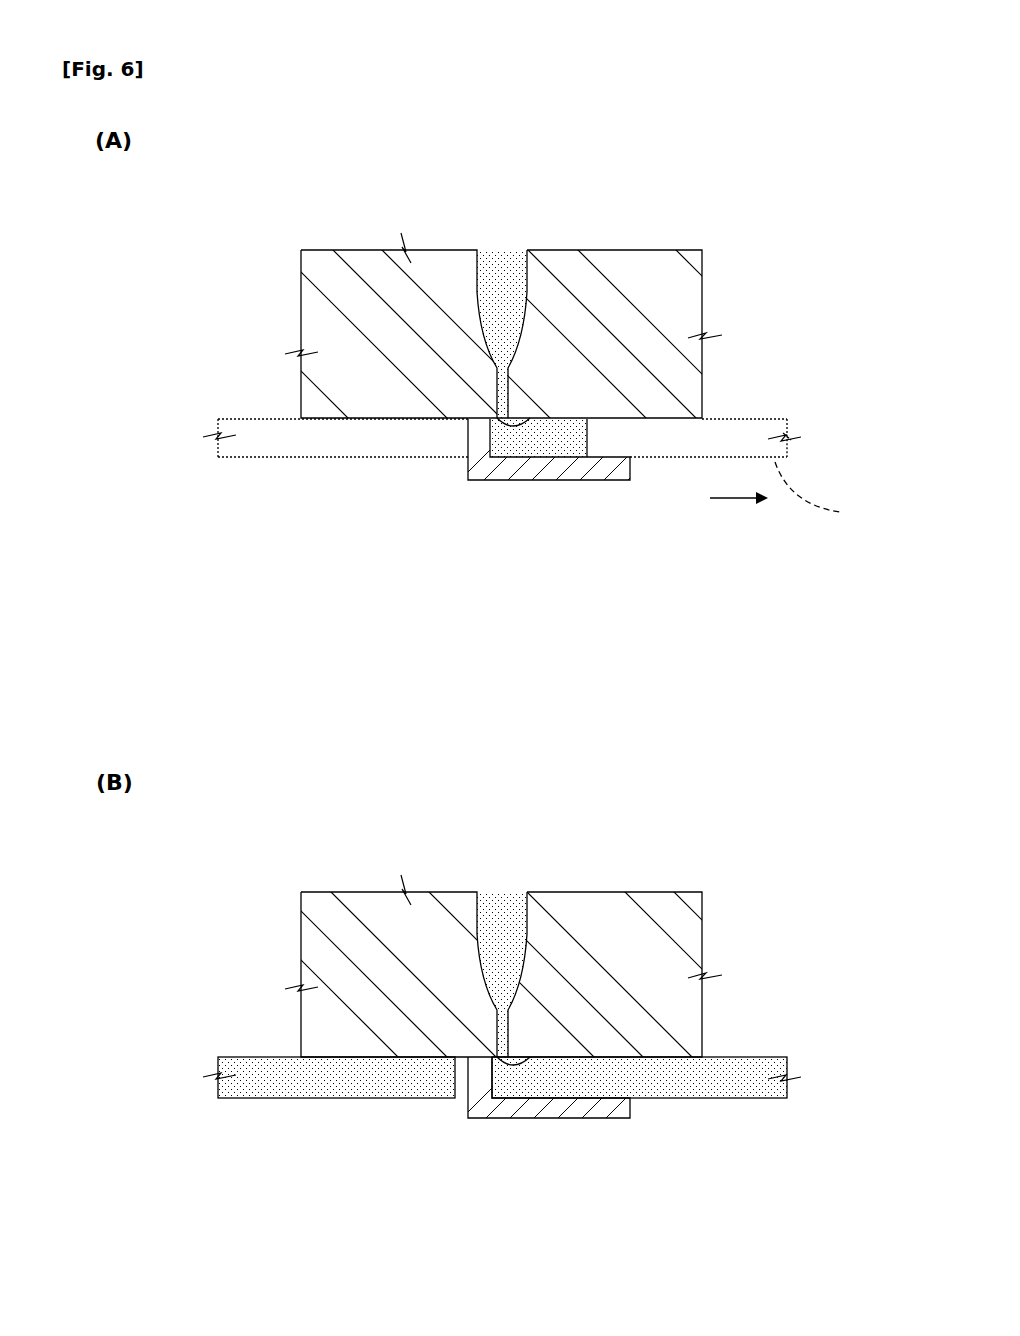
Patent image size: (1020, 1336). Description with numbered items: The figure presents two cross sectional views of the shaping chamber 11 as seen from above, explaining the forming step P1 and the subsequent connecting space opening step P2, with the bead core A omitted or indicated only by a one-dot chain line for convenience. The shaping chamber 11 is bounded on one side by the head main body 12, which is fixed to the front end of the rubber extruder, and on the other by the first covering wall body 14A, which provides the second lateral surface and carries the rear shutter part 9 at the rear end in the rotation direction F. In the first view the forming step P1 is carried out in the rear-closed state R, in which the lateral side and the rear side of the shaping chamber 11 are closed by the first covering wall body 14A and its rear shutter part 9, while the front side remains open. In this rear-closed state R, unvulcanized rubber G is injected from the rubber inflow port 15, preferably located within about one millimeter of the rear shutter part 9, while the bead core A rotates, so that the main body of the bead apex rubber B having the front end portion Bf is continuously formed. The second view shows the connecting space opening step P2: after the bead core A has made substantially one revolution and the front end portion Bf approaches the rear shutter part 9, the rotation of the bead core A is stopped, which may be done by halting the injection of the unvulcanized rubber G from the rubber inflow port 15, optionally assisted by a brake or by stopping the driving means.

The rear shutter part 9 is at (479, 425).
The shaping chamber 11 is at (540, 437).
The head main body 12 is at (648, 250).
The first covering wall body 14A is at (600, 482).
The rubber inflow port 15 is at (529, 418).
The unvulcanized rubber G is at (504, 272).
The front end portion Bf is at (587, 440).
The bead apex rubber B is at (372, 1080).
The forming step P1 is at (742, 404).
The connecting space opening step P2 is at (603, 1133).
The rear-closed state R is at (513, 490).
The rotation direction F is at (737, 500).
The bead core A is at (817, 494).